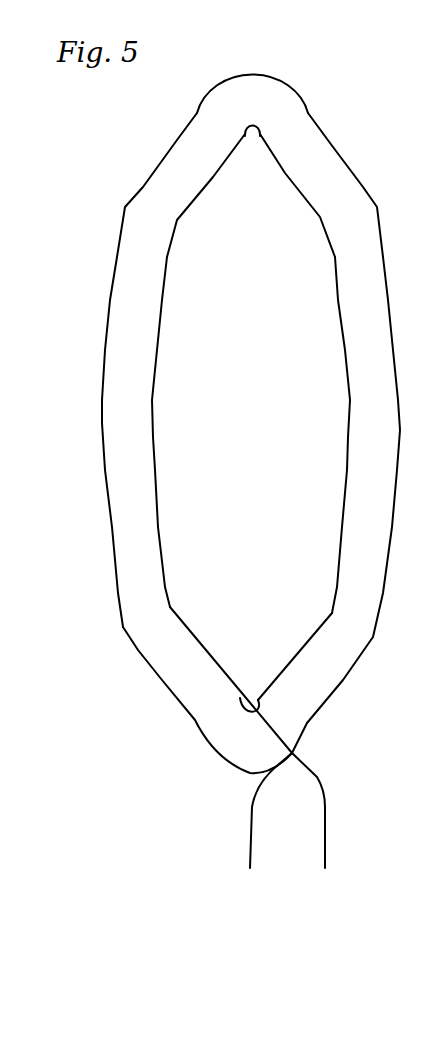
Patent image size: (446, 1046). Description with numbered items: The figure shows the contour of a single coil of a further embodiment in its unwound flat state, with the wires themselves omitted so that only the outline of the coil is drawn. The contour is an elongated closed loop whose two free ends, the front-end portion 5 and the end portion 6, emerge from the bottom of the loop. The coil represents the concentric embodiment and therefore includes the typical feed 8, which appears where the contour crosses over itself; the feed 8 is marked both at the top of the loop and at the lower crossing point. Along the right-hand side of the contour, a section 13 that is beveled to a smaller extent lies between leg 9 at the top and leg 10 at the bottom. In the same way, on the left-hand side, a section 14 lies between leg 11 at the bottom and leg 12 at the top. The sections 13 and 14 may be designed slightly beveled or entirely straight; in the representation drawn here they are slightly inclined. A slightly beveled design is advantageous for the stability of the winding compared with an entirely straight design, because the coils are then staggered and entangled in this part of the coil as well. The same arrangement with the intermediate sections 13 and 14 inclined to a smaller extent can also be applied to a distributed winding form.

The front-end portion 5 is at (322, 810).
The end portion 6 is at (271, 810).
The feed 8 is at (260, 689).
The leg 9 is at (321, 185).
The leg 10 is at (315, 683).
The leg 11 is at (207, 690).
The leg 12 is at (181, 185).
The section beveled to a smaller extent 13 is at (366, 447).
The section beveled to a smaller extent 14 is at (136, 442).